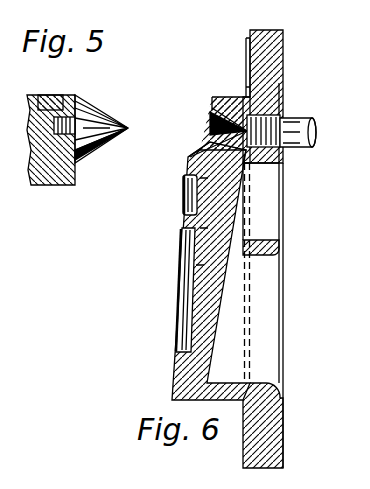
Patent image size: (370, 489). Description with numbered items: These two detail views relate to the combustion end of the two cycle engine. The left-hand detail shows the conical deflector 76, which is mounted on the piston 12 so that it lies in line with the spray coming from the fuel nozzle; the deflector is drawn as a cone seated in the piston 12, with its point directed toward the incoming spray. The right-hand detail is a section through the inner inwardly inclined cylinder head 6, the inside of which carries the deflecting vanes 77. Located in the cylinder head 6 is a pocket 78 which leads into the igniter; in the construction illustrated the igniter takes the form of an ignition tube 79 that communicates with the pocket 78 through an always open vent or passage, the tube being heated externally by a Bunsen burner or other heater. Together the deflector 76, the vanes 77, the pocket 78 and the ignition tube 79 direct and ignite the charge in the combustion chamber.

In FIG. 6, the inner inwardly inclined cylinder head 6 is at (262, 53).
In FIG. 5, the piston 12 is at (56, 175).
In FIG. 5, the conical deflector 76 is at (98, 127).
In FIG. 6, the deflecting vanes 77 is at (178, 305).
In FIG. 6, the pocket 78 is at (236, 130).
In FIG. 6, the ignition tube 79 is at (295, 130).